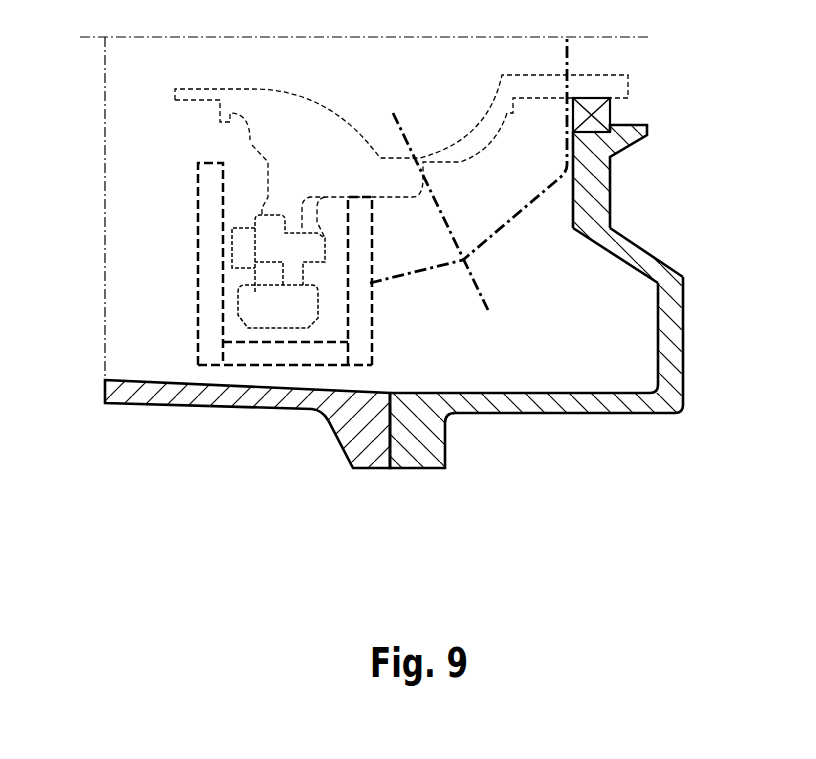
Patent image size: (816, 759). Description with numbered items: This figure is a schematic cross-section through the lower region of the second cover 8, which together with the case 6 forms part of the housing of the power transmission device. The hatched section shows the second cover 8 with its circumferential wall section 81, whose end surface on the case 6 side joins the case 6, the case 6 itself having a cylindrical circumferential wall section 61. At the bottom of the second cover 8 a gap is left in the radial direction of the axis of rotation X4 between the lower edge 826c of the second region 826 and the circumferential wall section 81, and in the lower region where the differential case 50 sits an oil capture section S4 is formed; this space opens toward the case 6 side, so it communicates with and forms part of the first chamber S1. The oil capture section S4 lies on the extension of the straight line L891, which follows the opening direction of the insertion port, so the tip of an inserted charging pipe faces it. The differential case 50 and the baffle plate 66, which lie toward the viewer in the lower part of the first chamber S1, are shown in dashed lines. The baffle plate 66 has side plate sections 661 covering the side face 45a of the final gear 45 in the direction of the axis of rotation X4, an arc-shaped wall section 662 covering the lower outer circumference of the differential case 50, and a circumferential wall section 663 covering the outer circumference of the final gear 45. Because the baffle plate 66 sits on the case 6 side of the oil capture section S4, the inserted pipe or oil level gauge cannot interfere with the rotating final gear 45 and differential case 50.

The axis of rotation X4 is at (343, 201).
The differential case 50 is at (242, 148).
The first chamber S1 is at (163, 245).
The straight line L891 is at (425, 195).
The side plate sections 661 is at (197, 359).
The final gear 45 is at (286, 272).
The side face 45a is at (318, 305).
The arc-shaped wall section 662 is at (502, 233).
The oil capture section S4 is at (640, 348).
The case 6 is at (341, 474).
The second cover 8 is at (449, 481).
The circumferential wall section 81 is at (577, 413).
The second region 826 is at (647, 190).
The lower edge 826c is at (643, 263).
The baffle plate 66 is at (178, 390).
The circumferential wall section 61 is at (208, 407).
The circumferential wall section 663 is at (287, 367).